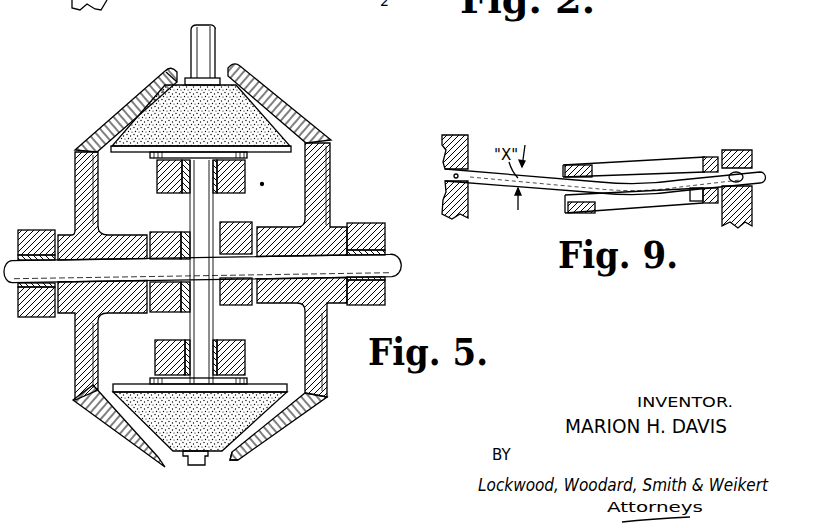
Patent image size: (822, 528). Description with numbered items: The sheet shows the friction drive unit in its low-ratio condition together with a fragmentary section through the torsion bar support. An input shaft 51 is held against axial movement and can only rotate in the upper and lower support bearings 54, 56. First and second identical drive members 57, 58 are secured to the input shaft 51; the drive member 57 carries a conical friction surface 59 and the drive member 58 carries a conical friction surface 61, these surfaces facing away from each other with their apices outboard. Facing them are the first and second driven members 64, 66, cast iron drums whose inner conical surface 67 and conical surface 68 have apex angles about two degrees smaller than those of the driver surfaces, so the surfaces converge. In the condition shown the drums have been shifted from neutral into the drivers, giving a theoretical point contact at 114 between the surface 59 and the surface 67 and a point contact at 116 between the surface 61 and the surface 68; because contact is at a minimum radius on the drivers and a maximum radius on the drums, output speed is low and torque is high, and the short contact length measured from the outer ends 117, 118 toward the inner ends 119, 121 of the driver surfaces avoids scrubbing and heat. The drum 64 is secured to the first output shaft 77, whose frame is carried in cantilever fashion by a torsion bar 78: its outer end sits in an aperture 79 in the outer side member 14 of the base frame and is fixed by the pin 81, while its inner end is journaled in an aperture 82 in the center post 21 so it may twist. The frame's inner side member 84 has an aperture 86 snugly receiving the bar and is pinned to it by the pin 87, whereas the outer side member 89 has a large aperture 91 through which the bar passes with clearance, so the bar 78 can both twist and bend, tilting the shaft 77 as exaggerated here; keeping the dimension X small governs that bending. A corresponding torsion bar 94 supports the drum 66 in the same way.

In FIG. 5, the input shaft 51 is at (220, 43).
In FIG. 5, the upper support bearing 54 is at (226, 195).
In FIG. 5, the lower support bearing 56 is at (216, 340).
In FIG. 5, the first drive member 57 is at (212, 104).
In FIG. 5, the second drive member 58 is at (178, 440).
In FIG. 5, the conical friction surface 59 is at (140, 96).
In FIG. 5, the conical friction surface 61 is at (278, 420).
In FIG. 5, the first driven member 64 is at (70, 153).
In FIG. 5, the second driven member 66 is at (334, 131).
In FIG. 5, the inner conical surface 67 is at (99, 153).
In FIG. 5, the conical surface 68 is at (303, 390).
In FIG. 5, the first output shaft 77 is at (122, 262).
In FIG. 5, the point contact 114 is at (171, 75).
In FIG. 5, the point contact 116 is at (228, 467).
In FIG. 5, the outer end of driver surface 117 is at (239, 68).
In FIG. 5, the outer end of driver surface 118 is at (212, 466).
In FIG. 5, the inner end of driver surface 119 is at (255, 153).
In FIG. 5, the inner end of driver surface 121 is at (264, 384).
In FIG. 9, the outer side member 14 is at (445, 148).
In FIG. 9, the center post 21 is at (752, 206).
In FIG. 9, the torsion bar 78 is at (612, 186).
In FIG. 9, the aperture 79 is at (450, 176).
In FIG. 9, the pin 81 is at (460, 176).
In FIG. 9, the aperture 82 is at (727, 151).
In FIG. 9, the inner side member 84 is at (703, 163).
In FIG. 9, the aperture 86 is at (696, 201).
In FIG. 9, the pin 87 is at (709, 204).
In FIG. 9, the outer side member 89 is at (574, 165).
In FIG. 9, the large aperture 91 is at (572, 197).
In FIG. 9, the torsion bar 94 is at (745, 174).